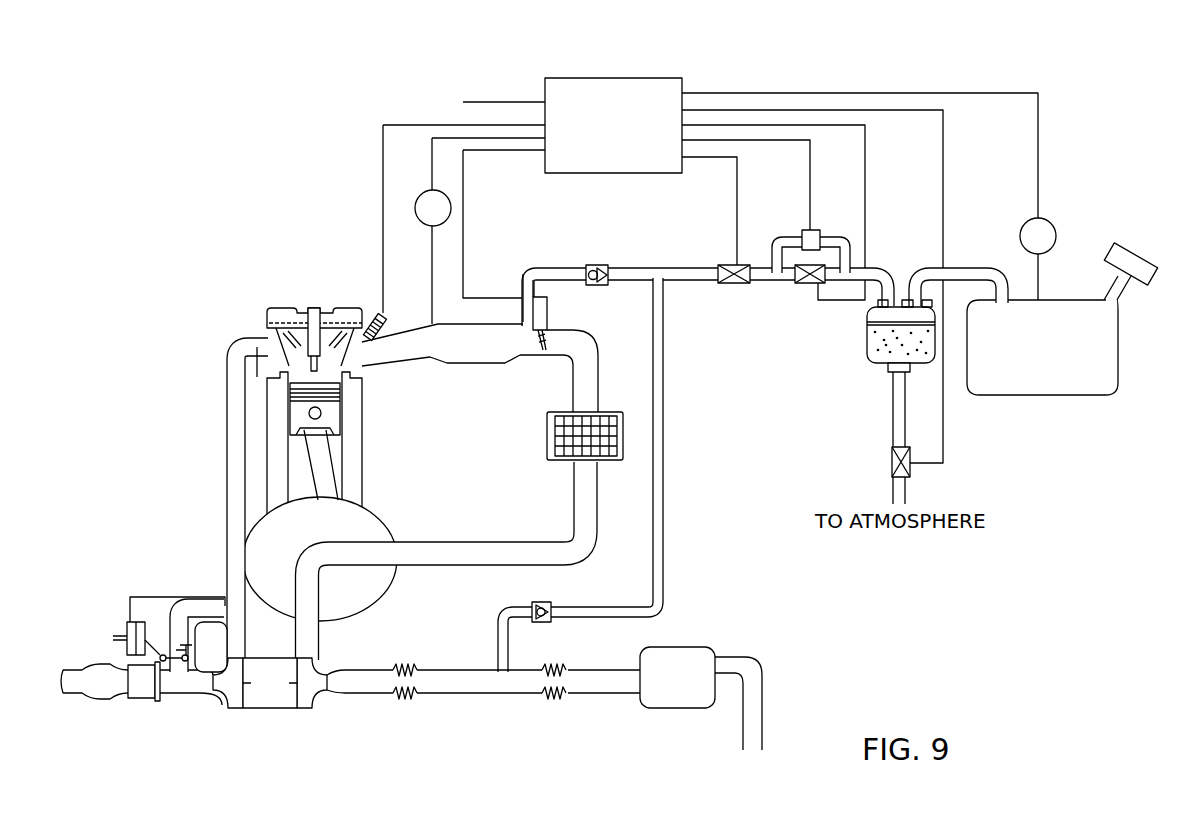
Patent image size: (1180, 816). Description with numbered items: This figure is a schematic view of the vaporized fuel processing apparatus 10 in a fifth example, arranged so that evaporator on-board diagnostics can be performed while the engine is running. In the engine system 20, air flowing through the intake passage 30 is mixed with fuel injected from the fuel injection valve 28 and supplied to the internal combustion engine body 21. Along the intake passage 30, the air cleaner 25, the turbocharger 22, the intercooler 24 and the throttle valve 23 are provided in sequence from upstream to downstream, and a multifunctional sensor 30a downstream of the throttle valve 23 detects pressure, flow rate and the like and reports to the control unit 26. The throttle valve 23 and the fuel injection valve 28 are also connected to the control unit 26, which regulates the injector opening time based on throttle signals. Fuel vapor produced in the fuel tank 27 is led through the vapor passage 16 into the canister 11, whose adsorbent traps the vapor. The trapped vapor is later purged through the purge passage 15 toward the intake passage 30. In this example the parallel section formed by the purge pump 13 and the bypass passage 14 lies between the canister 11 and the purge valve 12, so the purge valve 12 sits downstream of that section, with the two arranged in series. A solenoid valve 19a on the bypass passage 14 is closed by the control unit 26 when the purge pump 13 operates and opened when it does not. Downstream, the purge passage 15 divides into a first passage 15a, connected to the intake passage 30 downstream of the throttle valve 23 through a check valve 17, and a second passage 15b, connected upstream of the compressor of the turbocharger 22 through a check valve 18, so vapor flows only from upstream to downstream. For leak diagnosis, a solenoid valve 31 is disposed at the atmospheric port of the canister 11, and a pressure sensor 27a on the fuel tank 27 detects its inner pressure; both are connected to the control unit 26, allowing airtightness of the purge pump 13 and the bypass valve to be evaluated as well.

The vaporized fuel processing apparatus 10 is at (961, 192).
The canister 11 is at (912, 365).
The purge valve 12 is at (738, 264).
The purge pump 13 is at (816, 229).
The bypass passage 14 is at (780, 284).
The purge passage 15 is at (676, 267).
The first passage 15a is at (535, 267).
The second passage 15b is at (664, 510).
The vapor passage 16 is at (975, 267).
The check valve 17 is at (597, 264).
The check valve 18 is at (541, 600).
The solenoid valve 19a is at (813, 286).
The engine system 20 is at (250, 281).
The internal combustion engine body 21 is at (345, 307).
The turbocharger 22 is at (267, 696).
The throttle valve 23 is at (531, 352).
The intercooler 24 is at (625, 431).
The air cleaner 25 is at (677, 710).
The control unit 26 is at (633, 78).
The fuel tank 27 is at (1082, 297).
The pressure sensor 27a is at (1052, 224).
The fuel injection valve 28 is at (386, 314).
The intake passage 30 is at (600, 515).
The multifunctional sensor 30a is at (414, 206).
The solenoid valve 31 is at (891, 462).